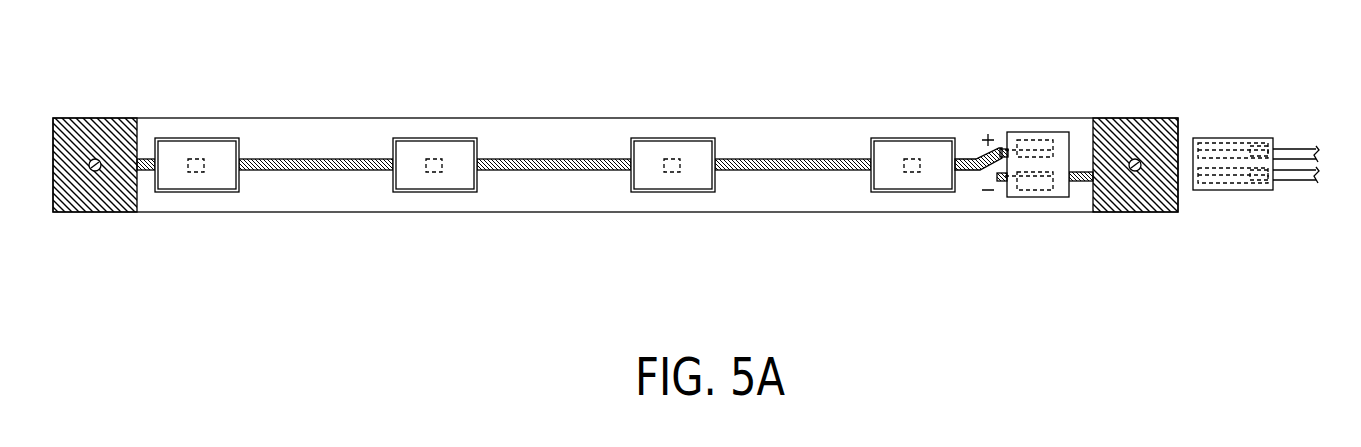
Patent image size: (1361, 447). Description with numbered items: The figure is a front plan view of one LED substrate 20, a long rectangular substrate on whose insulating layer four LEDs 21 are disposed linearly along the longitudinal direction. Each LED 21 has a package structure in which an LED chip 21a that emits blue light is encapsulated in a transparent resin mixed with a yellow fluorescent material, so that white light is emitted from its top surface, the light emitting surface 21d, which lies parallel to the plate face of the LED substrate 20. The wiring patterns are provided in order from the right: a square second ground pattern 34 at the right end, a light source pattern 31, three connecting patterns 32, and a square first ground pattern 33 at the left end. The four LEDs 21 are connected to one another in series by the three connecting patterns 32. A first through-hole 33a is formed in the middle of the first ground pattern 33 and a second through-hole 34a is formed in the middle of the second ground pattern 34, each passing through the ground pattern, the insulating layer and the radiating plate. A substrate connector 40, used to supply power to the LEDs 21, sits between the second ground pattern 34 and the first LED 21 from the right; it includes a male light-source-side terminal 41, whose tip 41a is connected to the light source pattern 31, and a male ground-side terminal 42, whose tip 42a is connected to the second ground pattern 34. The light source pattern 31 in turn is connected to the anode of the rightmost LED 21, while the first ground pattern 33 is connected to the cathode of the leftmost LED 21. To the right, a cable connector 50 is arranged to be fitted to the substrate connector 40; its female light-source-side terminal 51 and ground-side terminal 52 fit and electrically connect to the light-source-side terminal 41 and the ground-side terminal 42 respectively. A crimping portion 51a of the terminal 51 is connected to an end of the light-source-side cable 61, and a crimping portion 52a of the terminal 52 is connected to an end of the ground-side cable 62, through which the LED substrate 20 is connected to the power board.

The LED substrate 20 is at (601, 98).
The LED 21 is at (208, 193).
The LED chip 21a is at (197, 173).
The light emitting surface 21d is at (175, 148).
The light source pattern 31 is at (972, 158).
The connecting pattern 32 is at (301, 158).
The first ground pattern 33 is at (97, 128).
The first through-hole 33a is at (103, 169).
The second ground pattern 34 is at (1133, 120).
The second through-hole 34a is at (1140, 169).
The substrate connector 40 is at (1030, 132).
The light-source-side terminal 41 is at (1040, 148).
The tip of light-source-side terminal 41a is at (1003, 148).
The ground-side terminal 42 is at (1038, 192).
The tip of ground-side terminal 42a is at (1002, 182).
The cable connector 50 is at (1230, 138).
The light-source-side terminal 51 is at (1213, 146).
The crimping portion 51a is at (1255, 145).
The ground-side terminal 52 is at (1213, 185).
The crimping portion 52a is at (1255, 188).
The light-source-side cable 61 is at (1300, 152).
The ground-side cable 62 is at (1300, 178).